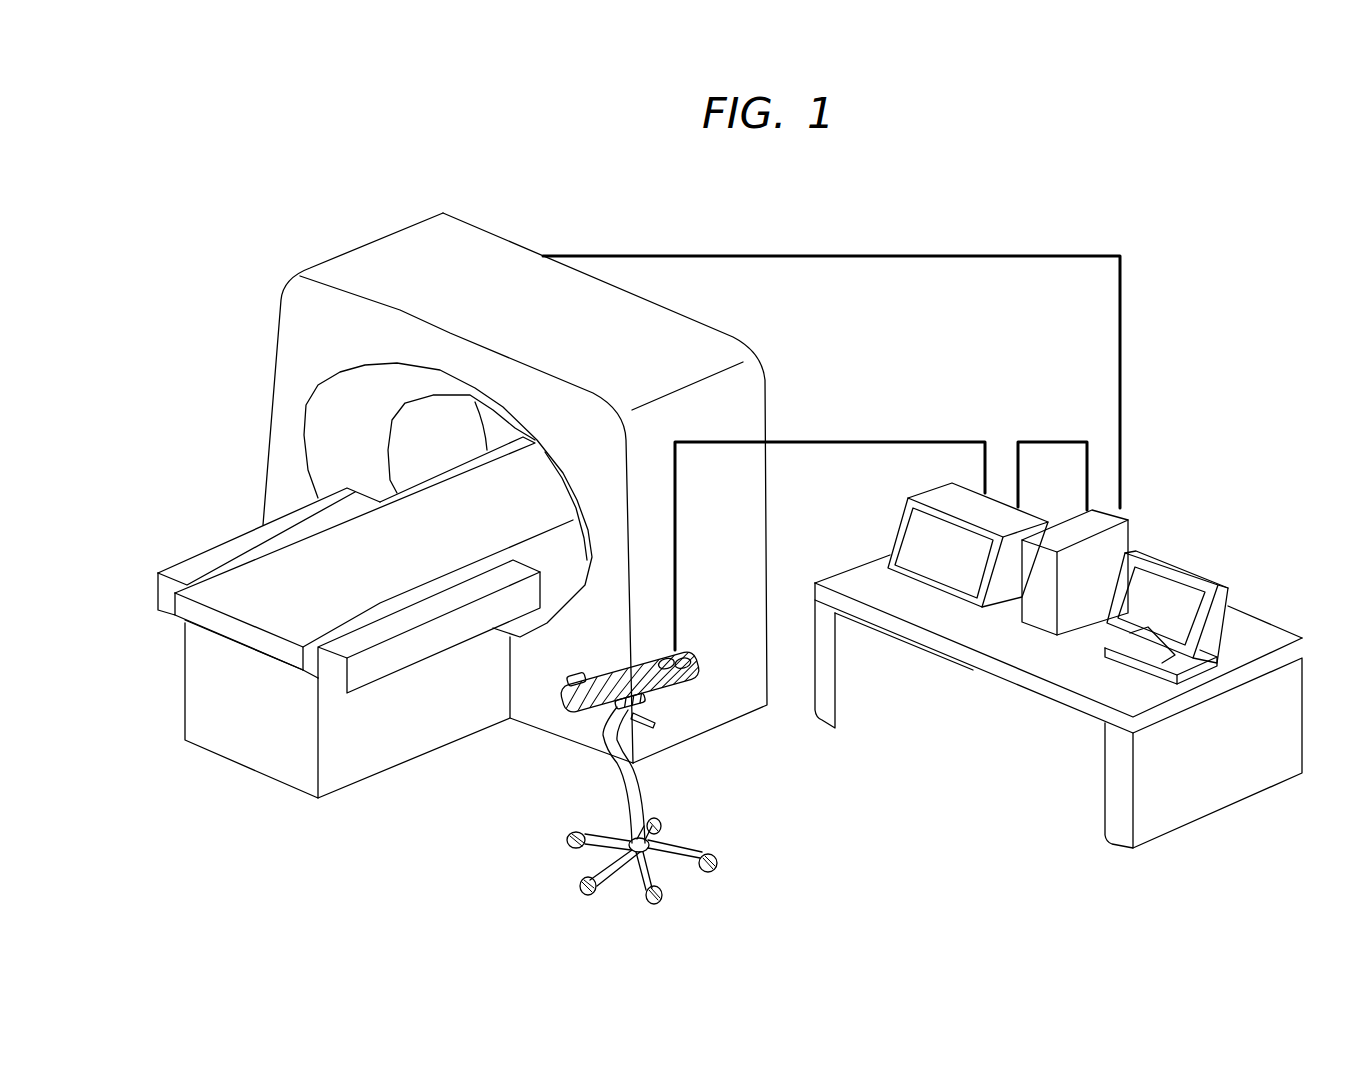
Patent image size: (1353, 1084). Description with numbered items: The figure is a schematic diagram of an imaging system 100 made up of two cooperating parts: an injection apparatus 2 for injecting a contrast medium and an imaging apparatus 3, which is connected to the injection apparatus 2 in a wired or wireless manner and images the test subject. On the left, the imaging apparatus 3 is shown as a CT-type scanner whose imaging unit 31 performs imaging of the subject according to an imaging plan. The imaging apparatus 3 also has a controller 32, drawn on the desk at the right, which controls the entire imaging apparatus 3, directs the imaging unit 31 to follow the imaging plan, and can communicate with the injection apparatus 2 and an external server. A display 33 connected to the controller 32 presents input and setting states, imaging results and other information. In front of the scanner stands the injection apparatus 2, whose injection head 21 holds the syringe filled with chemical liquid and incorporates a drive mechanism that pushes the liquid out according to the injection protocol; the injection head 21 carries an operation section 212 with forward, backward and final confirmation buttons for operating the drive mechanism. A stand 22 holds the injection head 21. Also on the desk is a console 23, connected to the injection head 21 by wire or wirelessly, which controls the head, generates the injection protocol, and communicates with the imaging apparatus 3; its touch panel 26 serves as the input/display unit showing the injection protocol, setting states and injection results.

The imaging system 100 is at (178, 296).
The imaging apparatus 3 is at (784, 342).
The imaging unit 31 is at (480, 247).
The injection apparatus 2 is at (680, 765).
The injection head 21 is at (567, 712).
The operation section 212 is at (676, 650).
The stand 22 is at (613, 838).
The console 23 is at (938, 502).
The touch panel 26 is at (955, 567).
The controller 32 is at (1038, 623).
The display 33 is at (1180, 590).